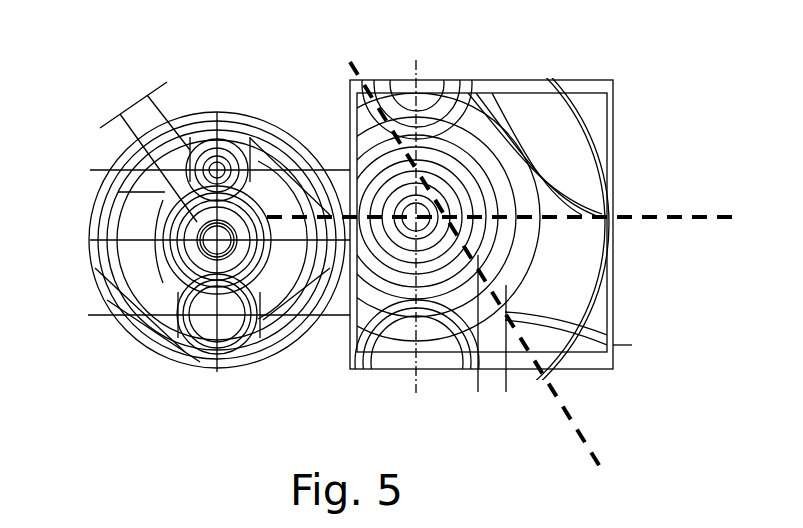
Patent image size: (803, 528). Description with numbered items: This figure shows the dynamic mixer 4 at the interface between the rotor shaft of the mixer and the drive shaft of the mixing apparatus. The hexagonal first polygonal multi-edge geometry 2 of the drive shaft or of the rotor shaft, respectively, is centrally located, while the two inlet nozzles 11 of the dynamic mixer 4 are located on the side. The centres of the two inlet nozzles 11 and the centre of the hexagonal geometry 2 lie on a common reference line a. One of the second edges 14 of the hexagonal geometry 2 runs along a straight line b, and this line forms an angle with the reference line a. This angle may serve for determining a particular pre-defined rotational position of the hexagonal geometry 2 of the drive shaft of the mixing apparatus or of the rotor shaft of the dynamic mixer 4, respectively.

The first polygonal multi-edge geometry 2 is at (177, 222).
The dynamic mixer 4 is at (127, 330).
The inlet nozzle 11 is at (225, 152).
The second edges 14 is at (97, 287).
The reference line a is at (415, 60).
The straight line running parallel to one of the edges of the polygonal multi-edge g b is at (634, 346).